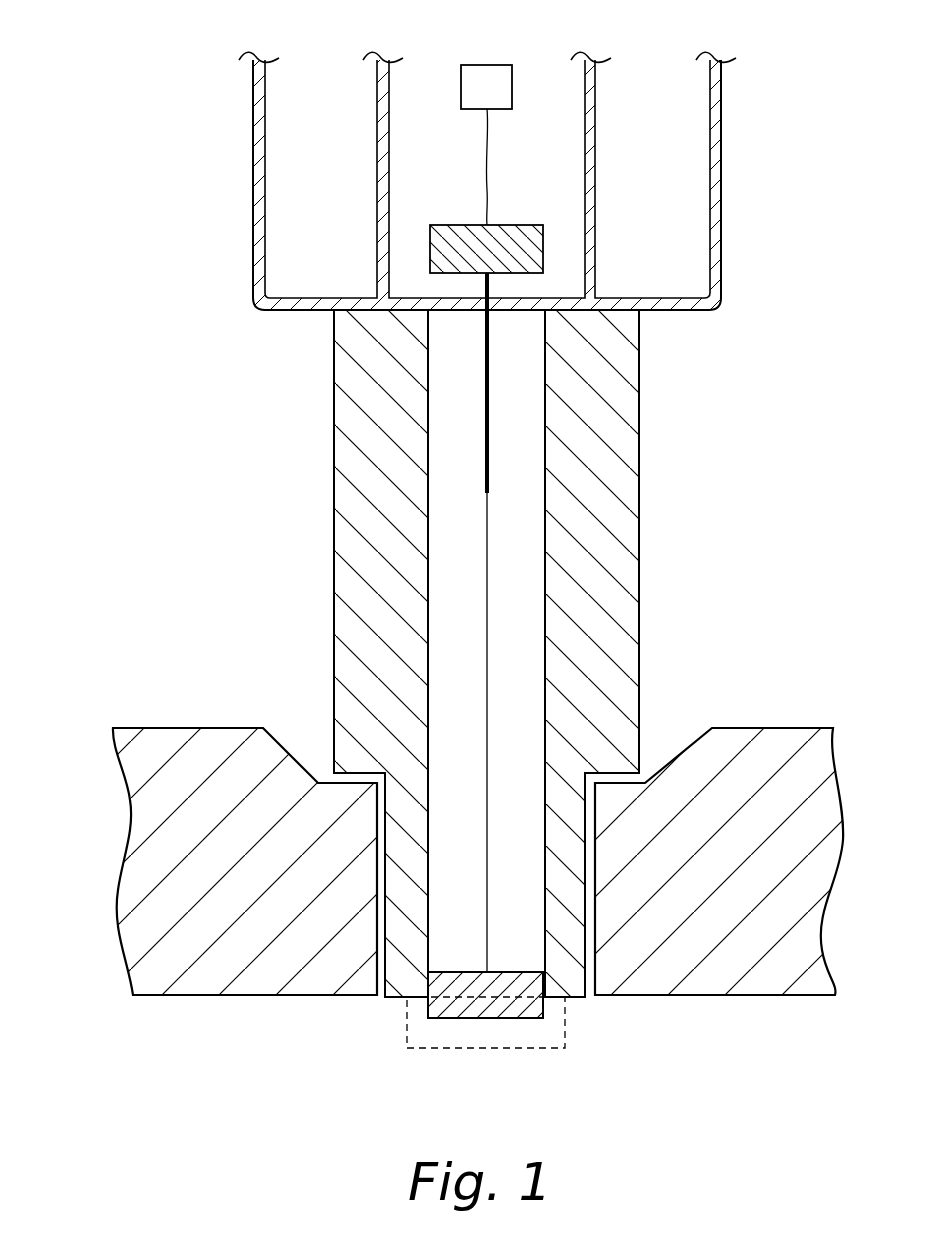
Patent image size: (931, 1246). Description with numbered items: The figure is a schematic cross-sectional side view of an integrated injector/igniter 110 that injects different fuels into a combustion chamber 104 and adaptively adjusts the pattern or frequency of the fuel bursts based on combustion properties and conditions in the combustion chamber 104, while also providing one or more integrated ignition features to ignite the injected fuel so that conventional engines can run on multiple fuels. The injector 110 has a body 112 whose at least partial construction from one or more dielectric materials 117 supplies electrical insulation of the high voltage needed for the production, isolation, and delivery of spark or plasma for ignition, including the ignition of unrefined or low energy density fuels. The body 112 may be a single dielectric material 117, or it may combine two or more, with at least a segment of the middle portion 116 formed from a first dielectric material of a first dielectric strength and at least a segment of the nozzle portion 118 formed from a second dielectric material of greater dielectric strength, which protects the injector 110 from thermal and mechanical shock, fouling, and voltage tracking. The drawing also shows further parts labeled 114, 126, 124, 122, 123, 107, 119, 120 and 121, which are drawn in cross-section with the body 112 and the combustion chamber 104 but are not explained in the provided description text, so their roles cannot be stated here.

The integrated injector/igniter 110 is at (127, 131).
The housing cup 114 is at (721, 125).
The connector 126 is at (478, 65).
The feedthrough block 124 is at (452, 225).
The lead wire 122 is at (487, 447).
The body 112 is at (346, 452).
The dielectric materials 117 is at (340, 620).
The middle portion 116 is at (632, 528).
The inner surface of body 123 is at (545, 640).
The nozzle portion 118 is at (578, 952).
The vessel wall 107 is at (785, 738).
The gap 119 is at (397, 1008).
The electrode 120 is at (500, 1012).
The sensing region 121 is at (428, 1050).
The combustion chamber 104 is at (157, 1146).